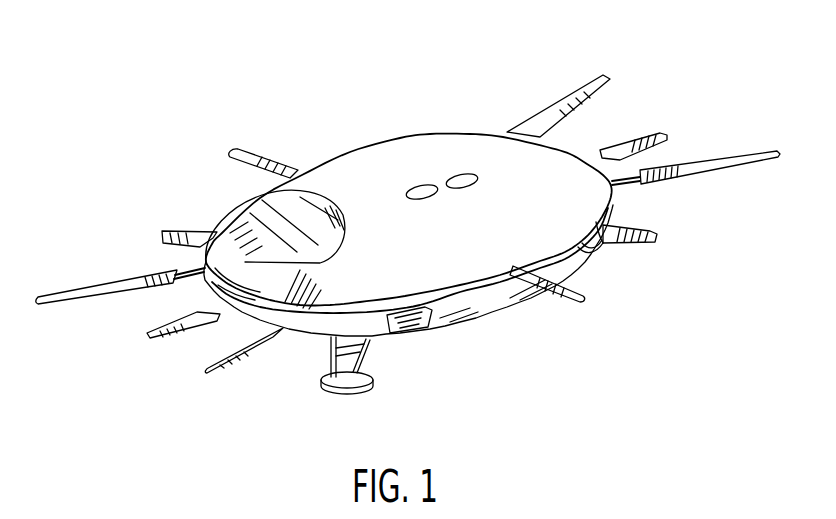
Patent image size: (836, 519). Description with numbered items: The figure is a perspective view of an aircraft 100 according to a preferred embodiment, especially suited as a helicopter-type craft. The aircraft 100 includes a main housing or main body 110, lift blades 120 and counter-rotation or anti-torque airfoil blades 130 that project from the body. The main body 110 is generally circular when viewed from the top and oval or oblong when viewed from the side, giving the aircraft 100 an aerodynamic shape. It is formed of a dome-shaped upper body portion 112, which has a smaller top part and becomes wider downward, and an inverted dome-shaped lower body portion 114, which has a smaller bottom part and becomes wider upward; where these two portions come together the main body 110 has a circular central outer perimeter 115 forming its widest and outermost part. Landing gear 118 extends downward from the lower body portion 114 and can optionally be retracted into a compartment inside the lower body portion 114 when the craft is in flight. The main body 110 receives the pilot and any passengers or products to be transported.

The aircraft 100 is at (417, 82).
The main body 110 is at (477, 123).
The upper body portion 112 is at (347, 175).
The lower body portion 114 is at (453, 315).
The outer perimeter 115 is at (573, 150).
The landing gear 118 is at (333, 343).
The lift blades 120 is at (700, 170).
The counter-rotation airfoil blades 130 is at (633, 240).